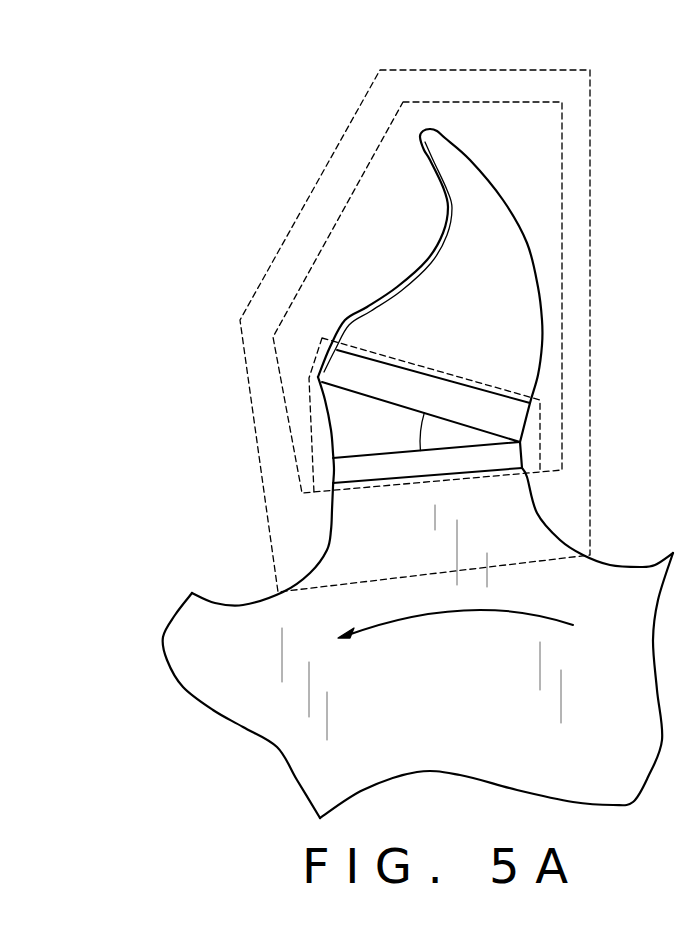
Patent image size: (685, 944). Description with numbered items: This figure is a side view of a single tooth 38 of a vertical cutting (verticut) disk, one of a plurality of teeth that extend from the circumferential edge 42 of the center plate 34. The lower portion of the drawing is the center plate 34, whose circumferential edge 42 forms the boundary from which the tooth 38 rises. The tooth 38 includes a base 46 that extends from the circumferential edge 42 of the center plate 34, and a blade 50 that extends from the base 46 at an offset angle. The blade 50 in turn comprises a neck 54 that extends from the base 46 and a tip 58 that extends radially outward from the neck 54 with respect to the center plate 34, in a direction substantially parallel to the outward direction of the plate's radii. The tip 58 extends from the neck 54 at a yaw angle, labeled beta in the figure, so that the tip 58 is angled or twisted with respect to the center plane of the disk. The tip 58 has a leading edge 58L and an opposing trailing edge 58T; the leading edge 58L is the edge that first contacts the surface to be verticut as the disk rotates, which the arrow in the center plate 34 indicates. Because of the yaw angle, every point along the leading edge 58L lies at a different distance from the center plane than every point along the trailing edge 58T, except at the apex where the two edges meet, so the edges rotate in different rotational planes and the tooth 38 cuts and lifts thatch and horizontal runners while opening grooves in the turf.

The center plate 34 is at (418, 597).
The tooth 38 is at (590, 162).
The circumferential edge 42 is at (262, 598).
The base 46 is at (392, 518).
The blade 50 is at (562, 318).
The neck 54 is at (540, 437).
The tip 58 is at (456, 284).
The leading edge 58L is at (427, 258).
The trailing edge 58T is at (537, 260).